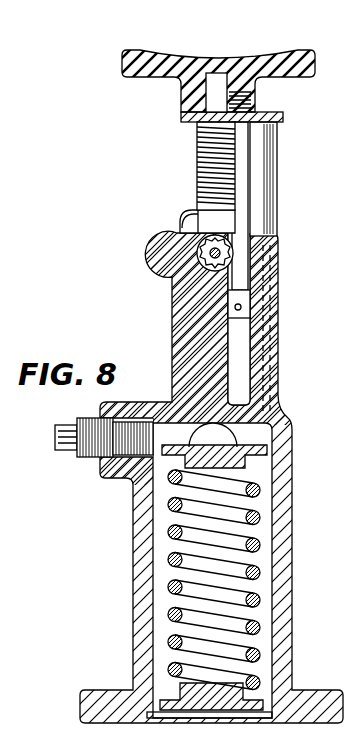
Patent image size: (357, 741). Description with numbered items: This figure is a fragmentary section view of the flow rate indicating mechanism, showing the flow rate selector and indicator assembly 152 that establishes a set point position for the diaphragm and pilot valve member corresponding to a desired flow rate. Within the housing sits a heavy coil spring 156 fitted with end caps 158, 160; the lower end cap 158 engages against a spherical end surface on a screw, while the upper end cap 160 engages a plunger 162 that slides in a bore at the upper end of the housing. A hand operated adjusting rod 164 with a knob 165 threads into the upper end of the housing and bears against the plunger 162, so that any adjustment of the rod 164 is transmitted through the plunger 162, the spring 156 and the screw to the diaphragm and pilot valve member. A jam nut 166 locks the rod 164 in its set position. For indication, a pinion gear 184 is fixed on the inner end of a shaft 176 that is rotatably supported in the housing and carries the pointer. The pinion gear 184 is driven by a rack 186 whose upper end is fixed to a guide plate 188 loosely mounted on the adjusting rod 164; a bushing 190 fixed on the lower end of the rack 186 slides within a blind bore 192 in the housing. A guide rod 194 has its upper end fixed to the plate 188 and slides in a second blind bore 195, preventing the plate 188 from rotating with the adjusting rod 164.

The flow rate selector and indicator assembly 152 is at (122, 505).
The heavy coil spring 156 is at (253, 543).
The end cap 158 is at (244, 697).
The end cap 160 is at (248, 470).
The plunger 162 is at (272, 437).
The adjusting rod 164 is at (202, 172).
The knob 165 is at (292, 52).
The jam nut 166 is at (188, 215).
The shaft 176 is at (200, 262).
The pinion gear 184 is at (197, 232).
The rack 186 is at (243, 270).
The guide plate 188 is at (183, 117).
The bushing 190 is at (241, 307).
The blind bore 192 is at (228, 337).
The guide rod 194 is at (278, 152).
The blind bore 195 is at (281, 341).